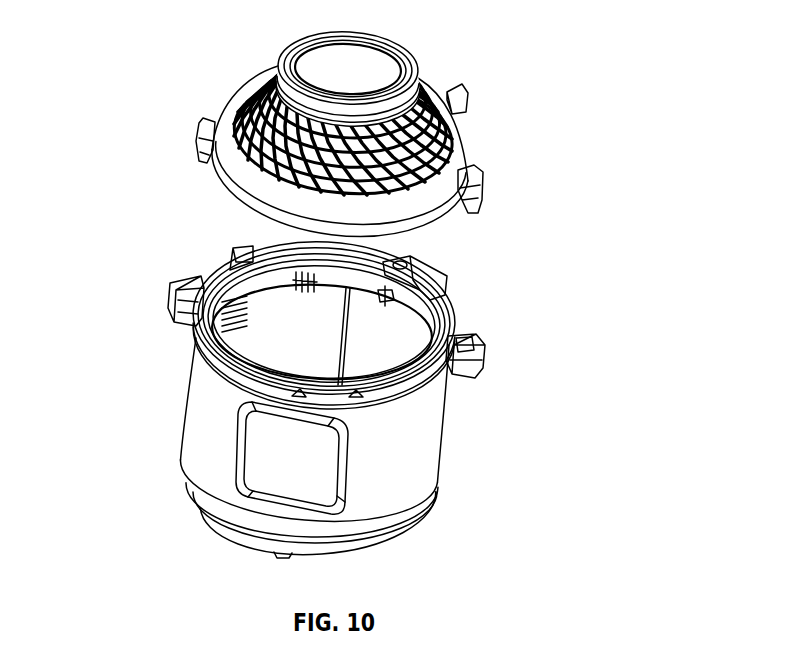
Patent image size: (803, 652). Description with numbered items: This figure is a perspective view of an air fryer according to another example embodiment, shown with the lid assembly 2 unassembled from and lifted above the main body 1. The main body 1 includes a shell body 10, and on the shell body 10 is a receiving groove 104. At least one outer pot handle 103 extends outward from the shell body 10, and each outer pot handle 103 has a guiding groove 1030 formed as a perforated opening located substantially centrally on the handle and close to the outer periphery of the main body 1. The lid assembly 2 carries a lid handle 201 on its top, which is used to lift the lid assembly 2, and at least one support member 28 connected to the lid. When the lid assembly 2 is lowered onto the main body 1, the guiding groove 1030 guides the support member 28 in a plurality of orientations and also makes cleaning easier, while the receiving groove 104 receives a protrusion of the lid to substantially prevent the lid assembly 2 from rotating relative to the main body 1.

The main body 1 is at (336, 360).
The lid assembly 2 is at (351, 127).
The shell body 10 is at (416, 450).
The support member 28 is at (474, 201).
The outer pot handle 103 is at (533, 352).
The receiving groove 104 is at (287, 248).
The lid handle 201 is at (398, 53).
The guiding groove 1030 is at (458, 336).